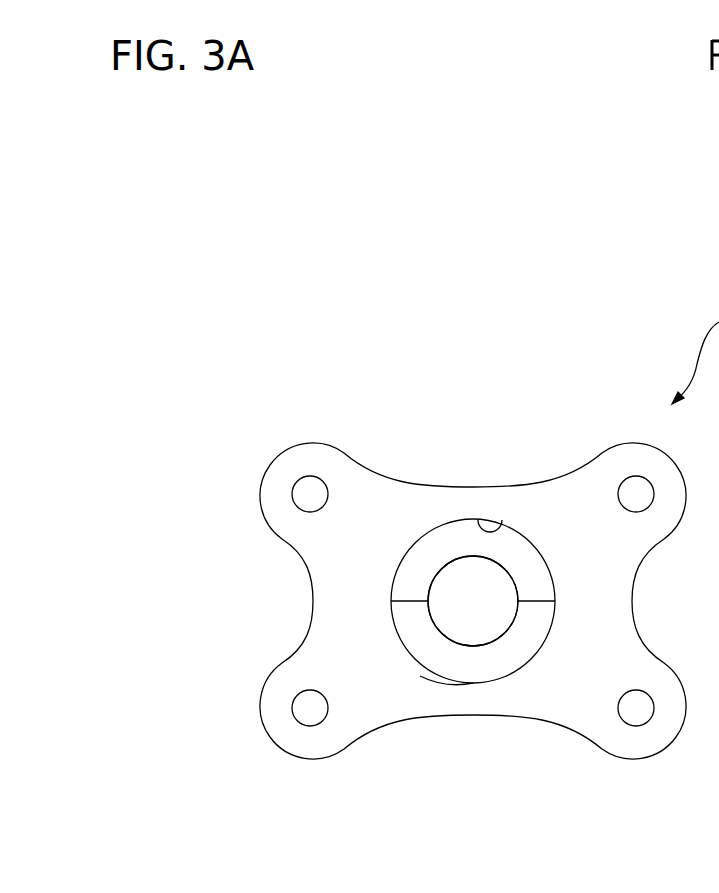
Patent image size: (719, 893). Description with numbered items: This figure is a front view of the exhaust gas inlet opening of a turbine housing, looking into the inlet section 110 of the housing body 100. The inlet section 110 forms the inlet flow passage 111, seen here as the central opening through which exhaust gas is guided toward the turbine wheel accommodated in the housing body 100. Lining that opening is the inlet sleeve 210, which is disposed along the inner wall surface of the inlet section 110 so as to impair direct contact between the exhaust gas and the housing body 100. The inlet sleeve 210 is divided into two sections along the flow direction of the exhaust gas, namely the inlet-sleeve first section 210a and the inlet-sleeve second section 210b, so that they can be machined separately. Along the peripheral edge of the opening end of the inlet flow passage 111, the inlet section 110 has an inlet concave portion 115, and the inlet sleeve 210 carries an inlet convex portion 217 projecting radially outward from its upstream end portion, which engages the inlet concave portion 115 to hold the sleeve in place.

The housing body 100 is at (426, 601).
The inlet section 110 is at (340, 597).
The inlet sleeve 210 is at (462, 617).
The inlet-sleeve first section 210a is at (480, 663).
The inlet-sleeve second section 210b is at (445, 542).
The inlet concave portion 115 is at (483, 523).
The inlet flow passage 111 is at (490, 614).
The inlet convex portion 217 is at (450, 665).